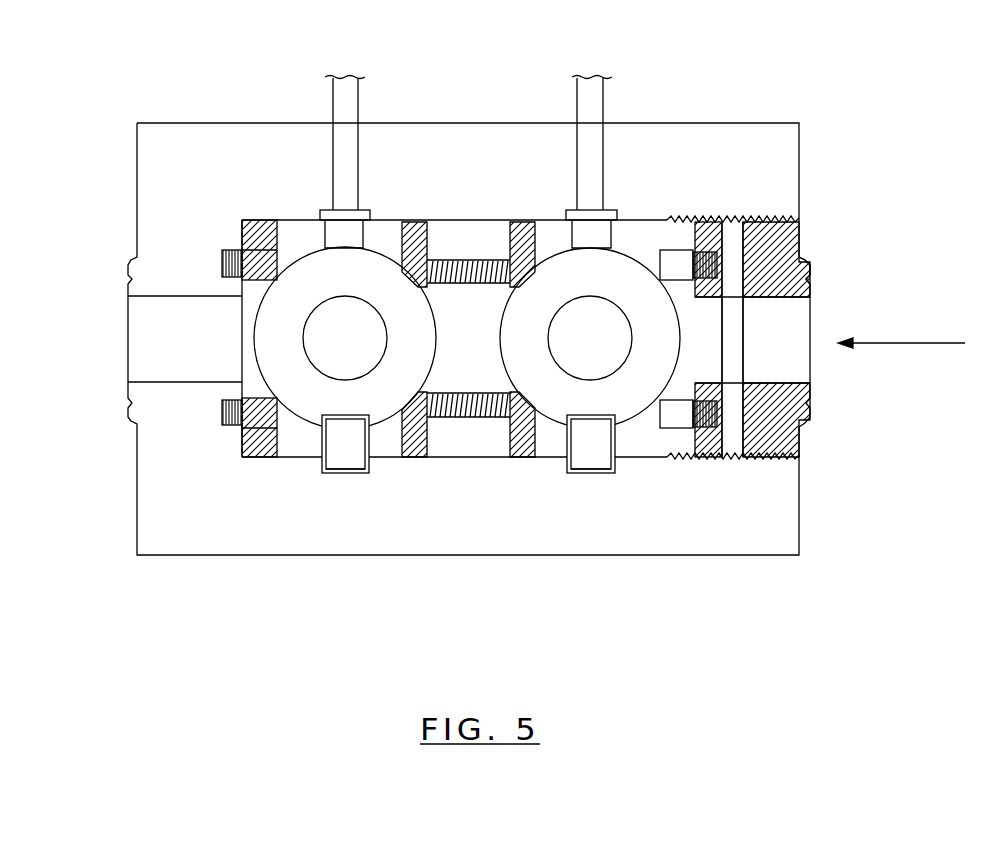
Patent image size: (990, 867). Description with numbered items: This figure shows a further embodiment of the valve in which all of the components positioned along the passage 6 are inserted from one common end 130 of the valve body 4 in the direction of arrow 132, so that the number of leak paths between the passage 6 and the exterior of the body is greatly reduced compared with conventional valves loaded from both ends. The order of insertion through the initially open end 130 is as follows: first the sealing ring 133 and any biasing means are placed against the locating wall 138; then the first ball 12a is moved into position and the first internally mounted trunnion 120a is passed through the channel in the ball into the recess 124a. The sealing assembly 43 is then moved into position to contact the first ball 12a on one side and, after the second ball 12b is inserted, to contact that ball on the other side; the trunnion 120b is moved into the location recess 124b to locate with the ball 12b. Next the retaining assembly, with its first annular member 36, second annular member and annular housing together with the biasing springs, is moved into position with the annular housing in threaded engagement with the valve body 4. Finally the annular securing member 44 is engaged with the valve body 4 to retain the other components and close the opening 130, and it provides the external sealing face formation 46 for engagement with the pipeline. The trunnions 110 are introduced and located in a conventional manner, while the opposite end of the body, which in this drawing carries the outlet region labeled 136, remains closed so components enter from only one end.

The valve body 4 is at (522, 150).
The passage 6 is at (685, 359).
The first ball 12a is at (312, 401).
The second ball 12b is at (573, 402).
The first annular member 36 is at (720, 258).
The sealing assembly 43 is at (462, 220).
The annular securing member 44 is at (797, 232).
The external sealing face formation 46 is at (807, 285).
The trunnions 110 is at (343, 100).
The first internally mounted trunnion 120a is at (368, 467).
The trunnion 120b is at (603, 463).
The recess 124a is at (353, 462).
The location recess 124b is at (585, 480).
The common end 130 is at (810, 322).
The arrow 132 is at (925, 345).
The sealing ring 133 is at (242, 450).
The outlet port 136 is at (128, 350).
The locating wall 138 is at (243, 242).